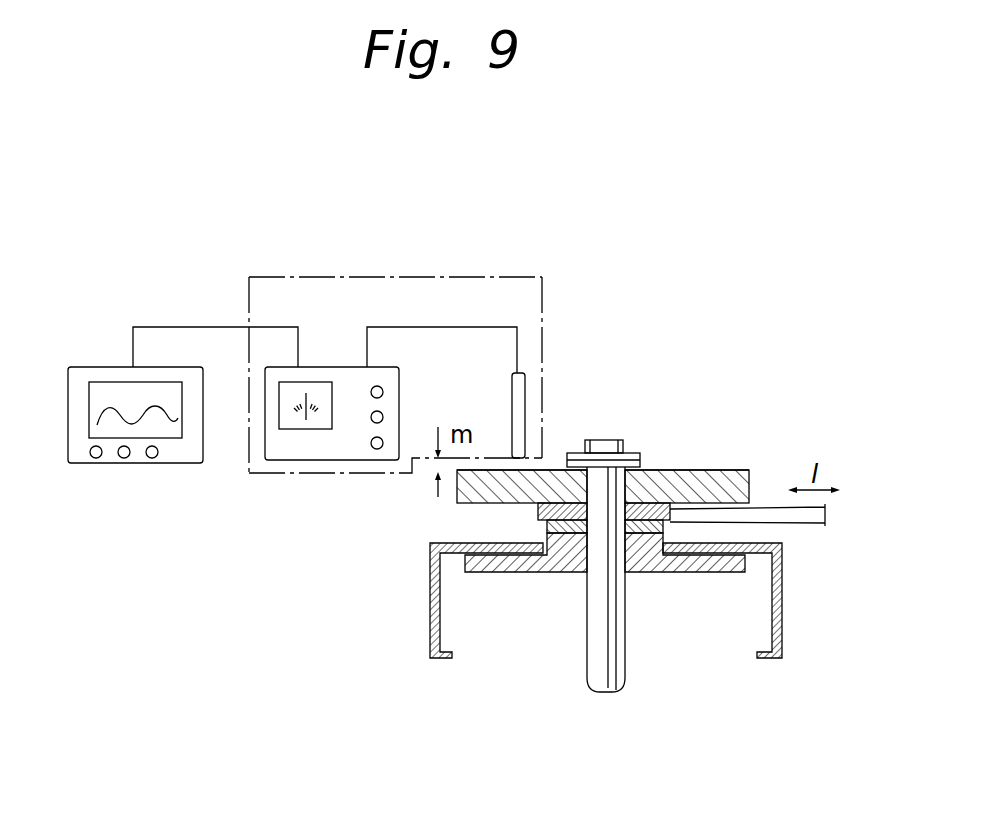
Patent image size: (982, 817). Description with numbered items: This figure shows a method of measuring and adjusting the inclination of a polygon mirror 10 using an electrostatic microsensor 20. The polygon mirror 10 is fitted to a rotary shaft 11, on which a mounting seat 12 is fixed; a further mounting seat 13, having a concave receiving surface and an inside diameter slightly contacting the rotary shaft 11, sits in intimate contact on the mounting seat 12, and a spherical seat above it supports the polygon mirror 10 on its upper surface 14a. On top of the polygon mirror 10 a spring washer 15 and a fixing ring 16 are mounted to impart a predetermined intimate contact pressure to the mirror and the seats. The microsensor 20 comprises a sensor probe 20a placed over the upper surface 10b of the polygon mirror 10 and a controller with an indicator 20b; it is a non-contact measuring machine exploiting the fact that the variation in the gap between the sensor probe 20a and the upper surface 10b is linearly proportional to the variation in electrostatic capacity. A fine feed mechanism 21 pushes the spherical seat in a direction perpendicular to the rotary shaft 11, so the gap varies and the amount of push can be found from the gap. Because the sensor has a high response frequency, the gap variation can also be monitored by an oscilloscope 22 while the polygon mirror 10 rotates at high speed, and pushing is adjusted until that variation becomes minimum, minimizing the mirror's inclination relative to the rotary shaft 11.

The polygon mirror 10 is at (727, 480).
The upper surface of the polygon mirror 10b is at (503, 470).
The rotary shaft 11 is at (597, 660).
The mounting seat 12 is at (725, 563).
The mounting seat 13 is at (647, 538).
The upper surface of the spherical seat 14a is at (670, 470).
The spring washer 15 is at (582, 441).
The fixing ring 16 is at (628, 452).
The microsensor 20 is at (388, 285).
The sensor probe 20a is at (518, 376).
The controller with an indicator 20b is at (310, 445).
The fine feed mechanism 21 is at (802, 523).
The oscilloscope 22 is at (90, 373).